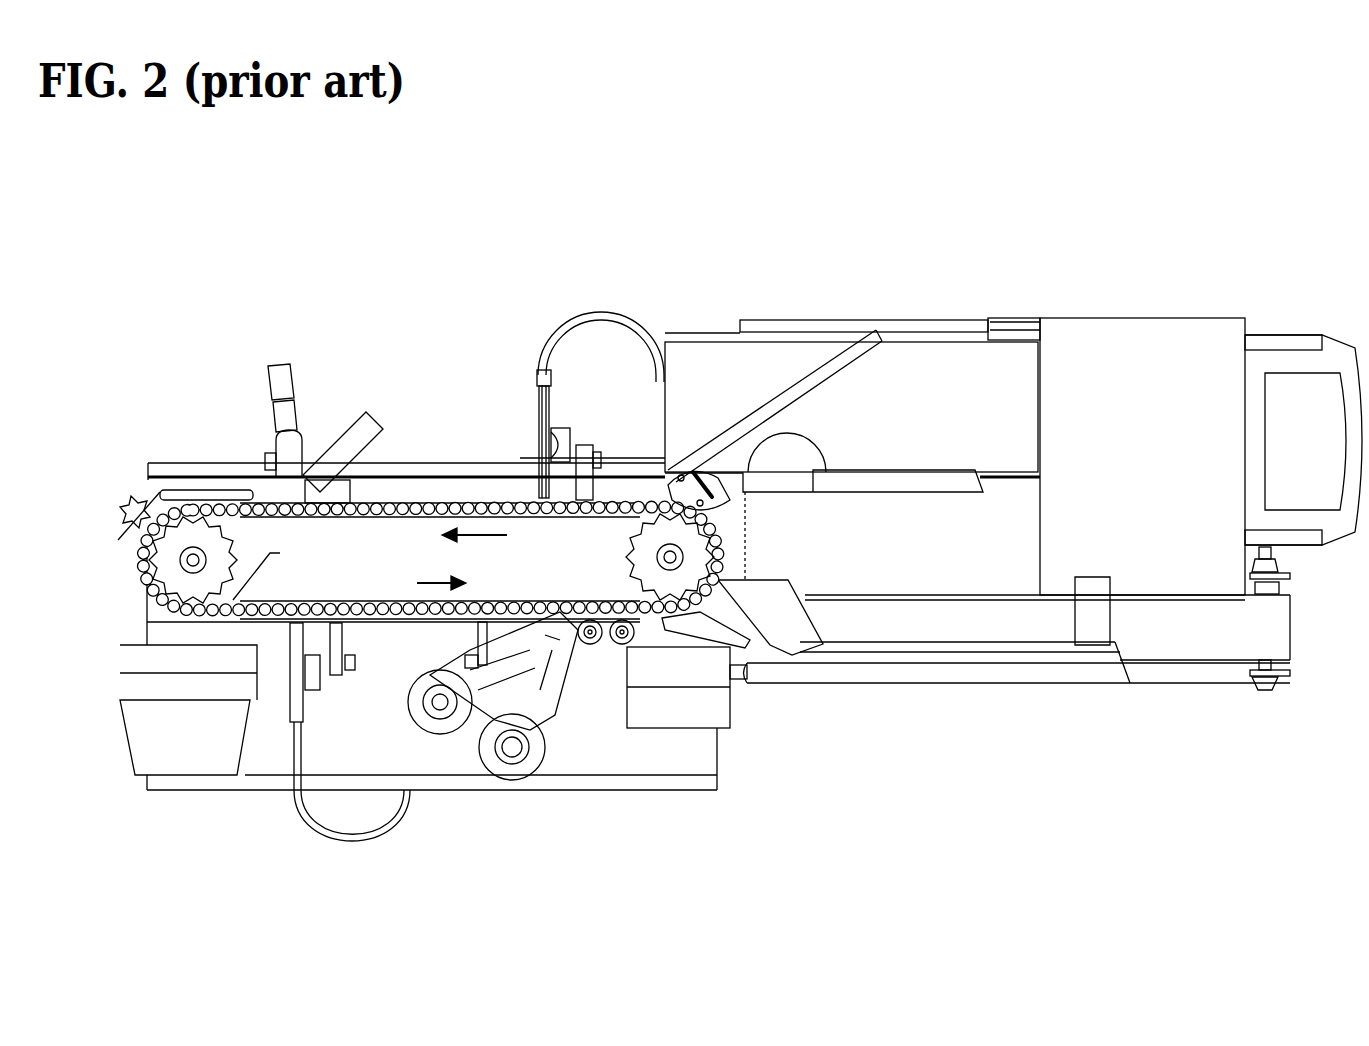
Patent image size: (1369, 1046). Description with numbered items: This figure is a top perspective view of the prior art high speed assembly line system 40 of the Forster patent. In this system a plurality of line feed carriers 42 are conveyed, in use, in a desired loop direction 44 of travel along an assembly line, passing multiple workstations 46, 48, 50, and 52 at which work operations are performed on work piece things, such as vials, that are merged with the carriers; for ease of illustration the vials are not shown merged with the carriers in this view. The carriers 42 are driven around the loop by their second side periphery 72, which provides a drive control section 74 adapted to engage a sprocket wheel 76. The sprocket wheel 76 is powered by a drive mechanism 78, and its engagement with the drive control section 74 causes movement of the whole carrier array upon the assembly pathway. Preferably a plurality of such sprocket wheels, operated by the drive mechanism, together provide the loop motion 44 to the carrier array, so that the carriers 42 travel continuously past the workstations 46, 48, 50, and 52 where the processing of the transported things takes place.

The high speed assembly line system 40 is at (1012, 504).
The line feed carriers 42 is at (527, 603).
The loop direction of travel 44 is at (459, 559).
The workstation 46 is at (292, 675).
The workstation 48 is at (557, 710).
The workstation 50 is at (533, 433).
The workstation 52 is at (315, 428).
The second side periphery 72 is at (373, 603).
The drive control section 74 is at (188, 548).
The sprocket wheel 76 is at (160, 522).
The drive mechanism 78 is at (183, 538).